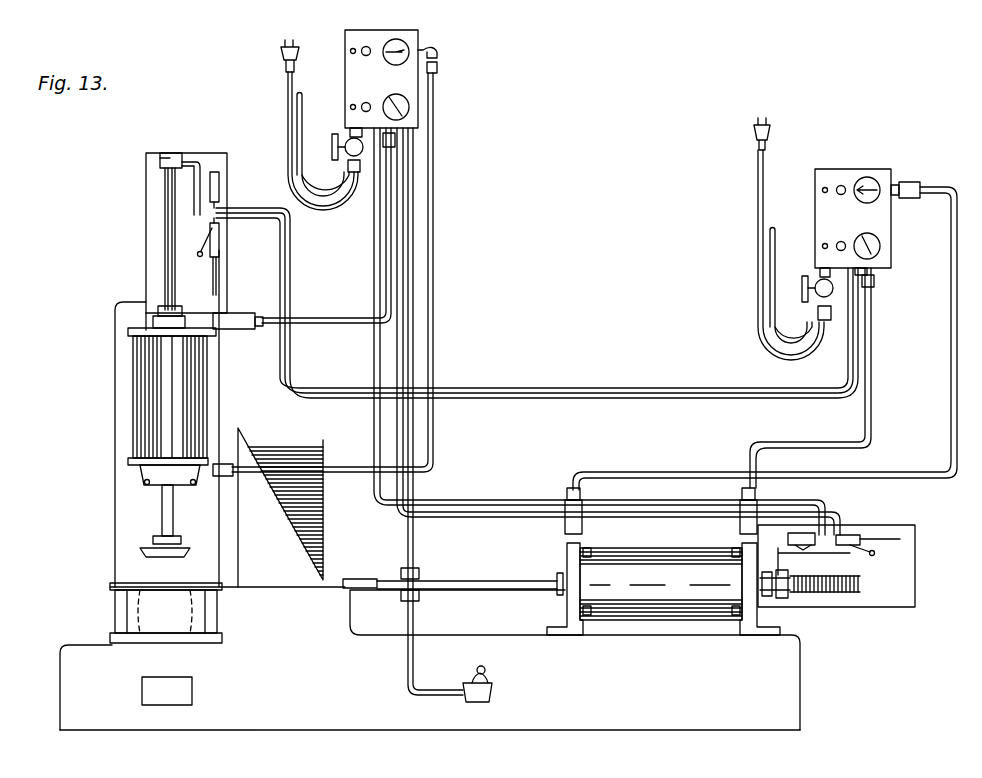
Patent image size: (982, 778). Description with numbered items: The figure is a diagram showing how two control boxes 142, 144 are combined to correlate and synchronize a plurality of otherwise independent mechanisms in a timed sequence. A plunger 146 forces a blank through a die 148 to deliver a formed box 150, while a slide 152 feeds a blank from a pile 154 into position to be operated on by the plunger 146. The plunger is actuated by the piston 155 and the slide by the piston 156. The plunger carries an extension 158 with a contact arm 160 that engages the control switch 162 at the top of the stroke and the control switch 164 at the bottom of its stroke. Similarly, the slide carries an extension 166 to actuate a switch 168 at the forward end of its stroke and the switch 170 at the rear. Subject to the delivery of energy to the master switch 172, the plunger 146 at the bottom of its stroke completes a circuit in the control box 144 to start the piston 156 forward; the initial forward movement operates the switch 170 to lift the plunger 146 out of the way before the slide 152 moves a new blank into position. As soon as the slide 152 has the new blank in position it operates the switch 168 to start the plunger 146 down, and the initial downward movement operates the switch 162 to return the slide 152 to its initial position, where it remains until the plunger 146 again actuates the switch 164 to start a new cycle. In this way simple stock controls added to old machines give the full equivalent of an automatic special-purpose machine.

The control box 142 is at (412, 88).
The control box 144 is at (853, 172).
The plunger 146 is at (163, 516).
The die 148 is at (136, 613).
The formed box 150 is at (192, 688).
The slide 152 is at (344, 584).
The pile 154 is at (326, 526).
The piston 155 is at (146, 387).
The piston 156 is at (703, 597).
The extension 158 is at (170, 210).
The contact arm 160 is at (192, 160).
The control switch 162 is at (219, 186).
The control switch 164 is at (219, 243).
The extension 166 is at (853, 592).
The switch 168 is at (800, 534).
The switch 170 is at (853, 536).
The master switch 172 is at (490, 690).